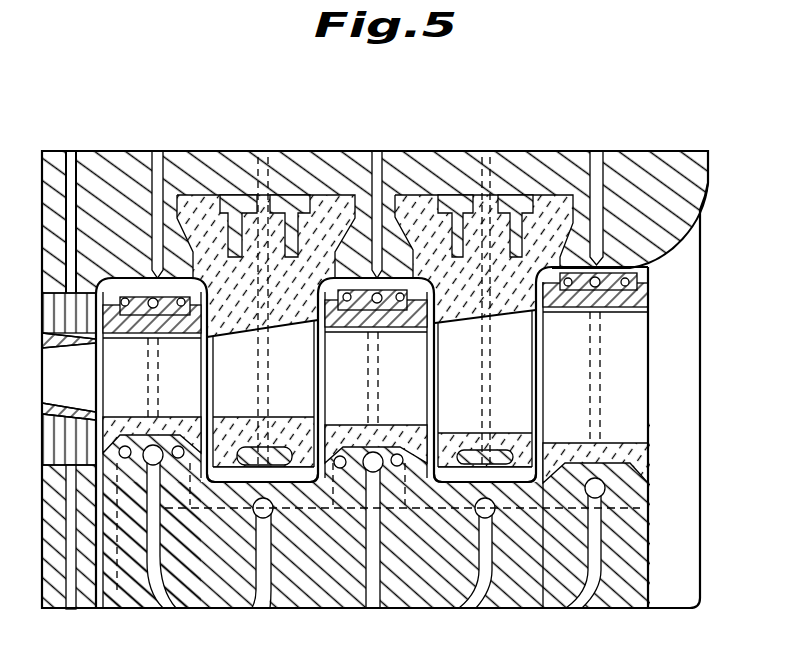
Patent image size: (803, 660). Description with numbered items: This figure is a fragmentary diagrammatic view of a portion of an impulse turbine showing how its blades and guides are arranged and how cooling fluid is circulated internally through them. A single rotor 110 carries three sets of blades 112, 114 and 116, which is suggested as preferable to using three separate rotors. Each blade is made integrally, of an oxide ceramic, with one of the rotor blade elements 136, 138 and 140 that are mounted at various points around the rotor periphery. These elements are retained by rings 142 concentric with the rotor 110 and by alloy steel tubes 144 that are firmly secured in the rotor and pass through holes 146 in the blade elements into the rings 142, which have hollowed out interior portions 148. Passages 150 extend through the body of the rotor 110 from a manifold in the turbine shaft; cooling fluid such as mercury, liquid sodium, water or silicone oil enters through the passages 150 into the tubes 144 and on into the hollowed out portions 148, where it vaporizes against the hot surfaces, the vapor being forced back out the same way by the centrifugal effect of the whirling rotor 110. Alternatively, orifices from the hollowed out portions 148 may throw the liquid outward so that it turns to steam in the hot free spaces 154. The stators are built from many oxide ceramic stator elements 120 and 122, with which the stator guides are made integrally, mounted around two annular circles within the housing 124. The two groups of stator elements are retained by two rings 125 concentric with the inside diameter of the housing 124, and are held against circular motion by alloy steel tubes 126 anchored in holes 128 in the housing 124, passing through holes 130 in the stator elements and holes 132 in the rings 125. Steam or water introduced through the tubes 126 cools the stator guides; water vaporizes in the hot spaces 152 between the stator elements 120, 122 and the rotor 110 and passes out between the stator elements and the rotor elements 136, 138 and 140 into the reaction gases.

The rotor 110 is at (526, 600).
The blade 112 is at (592, 437).
The blade 114 is at (376, 380).
The blade 116 is at (151, 443).
The stator element 120 is at (437, 467).
The stator element 122 is at (220, 466).
The housing 124 is at (546, 156).
The ring 125 is at (272, 466).
The alloy steel tube 126 is at (263, 350).
The hole 128 is at (288, 162).
The hole 130 is at (255, 334).
The hole 132 is at (293, 447).
The rotor blade element 136 is at (651, 294).
The rotor blade element 138 is at (388, 428).
The rotor blade element 140 is at (168, 421).
The ring 142 is at (122, 300).
The alloy steel tube 144 is at (150, 345).
The hole 146 is at (167, 331).
The hollowed out interior portion 148 is at (168, 301).
The passage 150 is at (173, 601).
The hot space 152 is at (372, 477).
The hot free space 154 is at (672, 256).